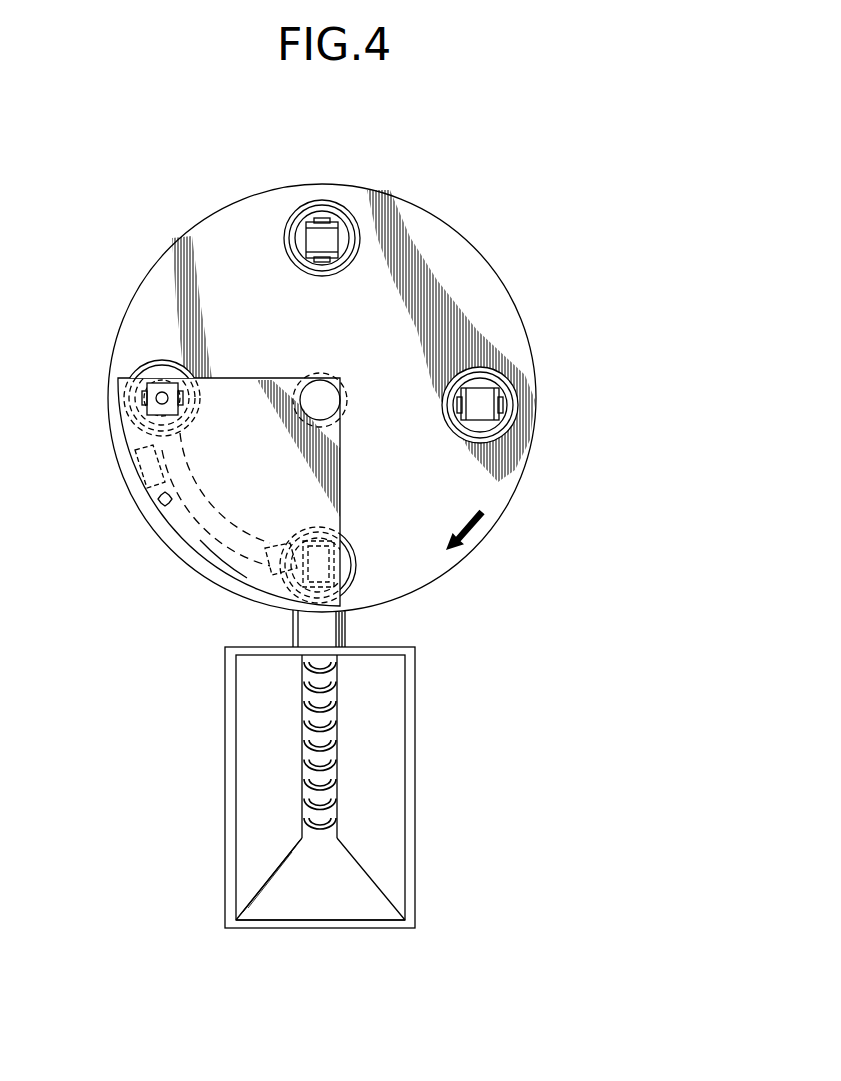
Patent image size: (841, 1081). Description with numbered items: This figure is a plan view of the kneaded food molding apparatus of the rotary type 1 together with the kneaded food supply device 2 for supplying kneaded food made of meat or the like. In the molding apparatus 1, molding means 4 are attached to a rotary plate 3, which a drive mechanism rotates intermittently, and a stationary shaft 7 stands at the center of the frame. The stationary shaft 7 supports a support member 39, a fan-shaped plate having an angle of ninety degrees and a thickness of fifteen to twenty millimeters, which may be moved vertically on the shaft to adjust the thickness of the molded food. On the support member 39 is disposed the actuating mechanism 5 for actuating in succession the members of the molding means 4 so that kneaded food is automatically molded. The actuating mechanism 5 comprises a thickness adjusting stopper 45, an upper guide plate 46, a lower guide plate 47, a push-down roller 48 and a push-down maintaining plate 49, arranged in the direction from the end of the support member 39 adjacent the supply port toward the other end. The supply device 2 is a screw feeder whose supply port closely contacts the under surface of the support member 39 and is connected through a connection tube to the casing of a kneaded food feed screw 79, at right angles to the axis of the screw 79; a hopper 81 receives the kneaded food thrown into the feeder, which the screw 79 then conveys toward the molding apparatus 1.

The kneaded food molding apparatus of the rotary type 1 is at (457, 218).
The kneaded food supply device 2 is at (430, 752).
The rotary plate 3 is at (401, 438).
The molding means 4 is at (348, 563).
The actuating mechanism 5 is at (197, 532).
The stationary shaft 7 is at (327, 393).
The support member 39 is at (247, 578).
The thickness adjusting stopper 45 is at (321, 556).
The upper guide plate 46 is at (230, 533).
The lower guide plate 47 is at (172, 447).
The push-down roller 48 is at (160, 502).
The push-down maintaining plate 49 is at (140, 471).
The kneaded food feed screw 79 is at (302, 772).
The hopper 81 is at (378, 834).